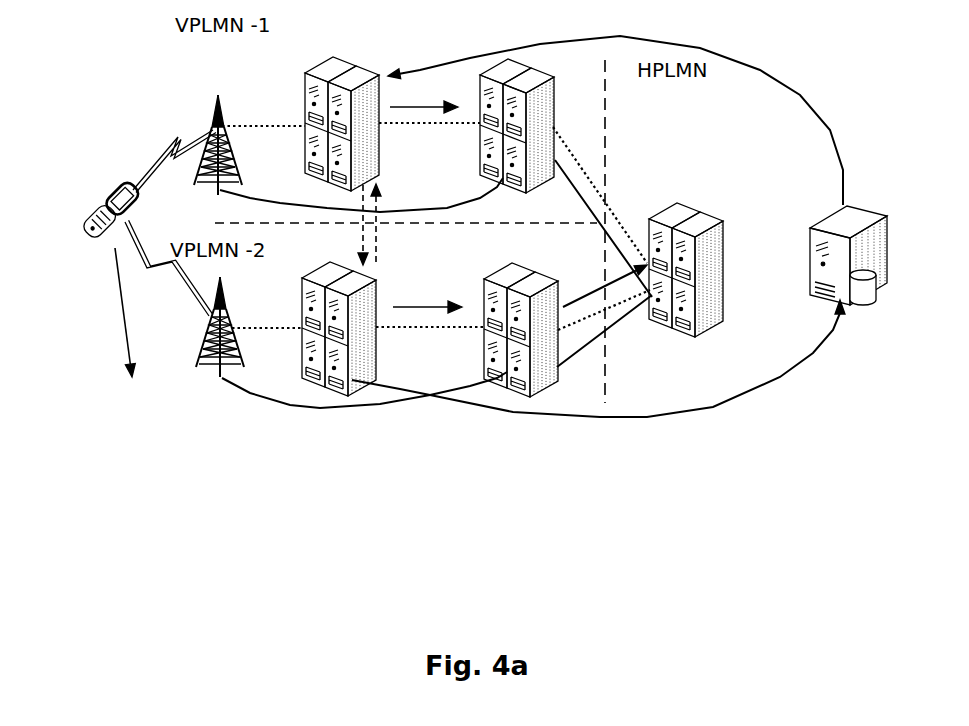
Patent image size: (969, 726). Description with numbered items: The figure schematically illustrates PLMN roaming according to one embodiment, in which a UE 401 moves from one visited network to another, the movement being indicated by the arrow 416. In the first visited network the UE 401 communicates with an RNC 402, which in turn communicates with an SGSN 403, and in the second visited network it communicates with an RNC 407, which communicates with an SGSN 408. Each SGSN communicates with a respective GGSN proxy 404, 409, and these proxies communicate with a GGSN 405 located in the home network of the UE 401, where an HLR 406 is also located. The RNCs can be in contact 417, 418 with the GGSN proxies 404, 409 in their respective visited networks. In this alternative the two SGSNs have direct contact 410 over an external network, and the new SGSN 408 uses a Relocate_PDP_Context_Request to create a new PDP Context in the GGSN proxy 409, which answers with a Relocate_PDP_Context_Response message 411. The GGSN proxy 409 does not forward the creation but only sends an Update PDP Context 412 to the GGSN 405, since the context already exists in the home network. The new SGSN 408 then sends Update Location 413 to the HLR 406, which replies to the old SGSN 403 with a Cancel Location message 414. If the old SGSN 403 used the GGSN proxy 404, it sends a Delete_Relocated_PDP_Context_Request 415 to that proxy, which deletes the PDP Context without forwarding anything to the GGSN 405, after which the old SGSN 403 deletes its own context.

The UE 401 is at (110, 195).
The RNC 402 is at (216, 103).
The SGSN 403 is at (330, 56).
The GGSN proxy 404 is at (513, 58).
The GGSN 405 is at (680, 202).
The HLR 406 is at (871, 193).
The RNC 407 is at (217, 368).
The SGSN 408 is at (345, 385).
The GGSN proxy 409 is at (527, 397).
The direct contact 410 is at (370, 236).
The Relocate_PDP_Context_Response message 411 is at (422, 302).
The Update PDP Context 412 is at (602, 287).
The Update Location 413 is at (738, 407).
The Cancel Location message 414 is at (768, 70).
The Delete_Relocated_PDP_Context_Request 415 is at (430, 100).
The arrow 416 is at (106, 312).
The contact 417 is at (305, 408).
The contact 418 is at (287, 202).